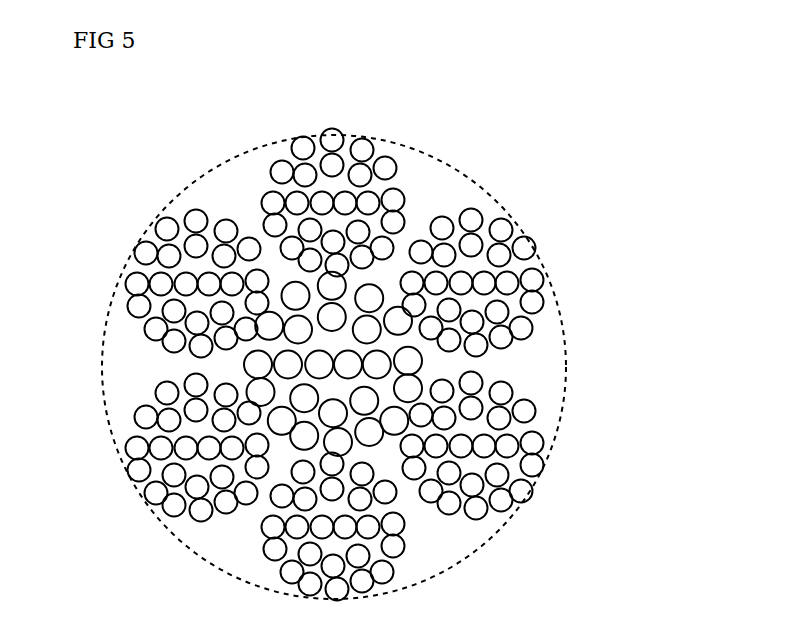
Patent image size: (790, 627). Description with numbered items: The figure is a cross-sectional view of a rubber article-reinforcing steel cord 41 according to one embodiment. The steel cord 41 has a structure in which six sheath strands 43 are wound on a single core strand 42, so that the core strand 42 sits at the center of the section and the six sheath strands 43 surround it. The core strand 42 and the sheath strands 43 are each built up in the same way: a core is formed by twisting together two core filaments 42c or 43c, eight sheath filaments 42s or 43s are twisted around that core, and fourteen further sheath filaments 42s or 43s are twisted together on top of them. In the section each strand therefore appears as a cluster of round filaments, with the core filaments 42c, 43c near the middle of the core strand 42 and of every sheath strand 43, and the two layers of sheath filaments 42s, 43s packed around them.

The steel cord 41 is at (489, 147).
The core strand 42 is at (459, 364).
The core filament 42c is at (396, 338).
The sheath filament 42s is at (397, 374).
The sheath strand 43 is at (391, 365).
The core filament 43c is at (518, 256).
The sheath filament 43s is at (522, 229).